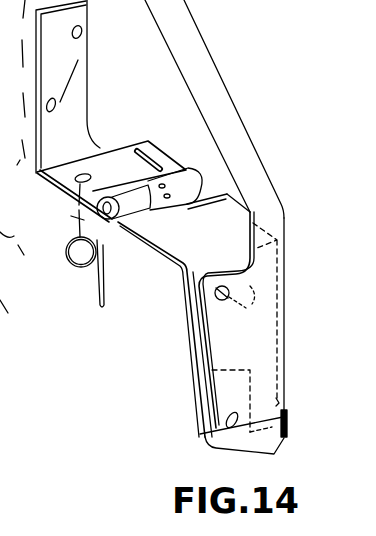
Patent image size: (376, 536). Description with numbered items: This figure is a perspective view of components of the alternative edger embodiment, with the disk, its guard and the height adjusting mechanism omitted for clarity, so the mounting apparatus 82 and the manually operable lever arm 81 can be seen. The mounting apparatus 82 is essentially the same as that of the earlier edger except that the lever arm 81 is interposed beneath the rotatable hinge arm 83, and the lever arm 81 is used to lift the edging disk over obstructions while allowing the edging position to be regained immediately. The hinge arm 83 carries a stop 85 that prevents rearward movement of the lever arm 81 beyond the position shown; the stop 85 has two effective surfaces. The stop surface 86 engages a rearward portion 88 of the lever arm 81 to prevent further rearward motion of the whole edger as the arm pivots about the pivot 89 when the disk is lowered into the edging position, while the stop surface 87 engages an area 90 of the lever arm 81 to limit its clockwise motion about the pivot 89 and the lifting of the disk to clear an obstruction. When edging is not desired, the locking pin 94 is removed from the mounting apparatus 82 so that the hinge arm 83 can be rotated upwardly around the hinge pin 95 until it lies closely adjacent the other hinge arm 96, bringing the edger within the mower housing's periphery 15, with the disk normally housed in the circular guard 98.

The periphery 15 is at (22, 156).
The lever arm 81 is at (248, 157).
The mounting apparatus 82 is at (189, 151).
The hinge arm 83 is at (168, 268).
The stop 85 is at (290, 441).
The stop surface 86 is at (242, 447).
The stop surface 87 is at (283, 408).
The rearward portion 88 is at (215, 443).
The pivot 89 is at (253, 306).
The area 90 is at (278, 178).
The locking pin 94 is at (104, 278).
The hinge pin 95 is at (107, 197).
The hinge arm 96 is at (104, 150).
The circular guard 98 is at (108, 12).